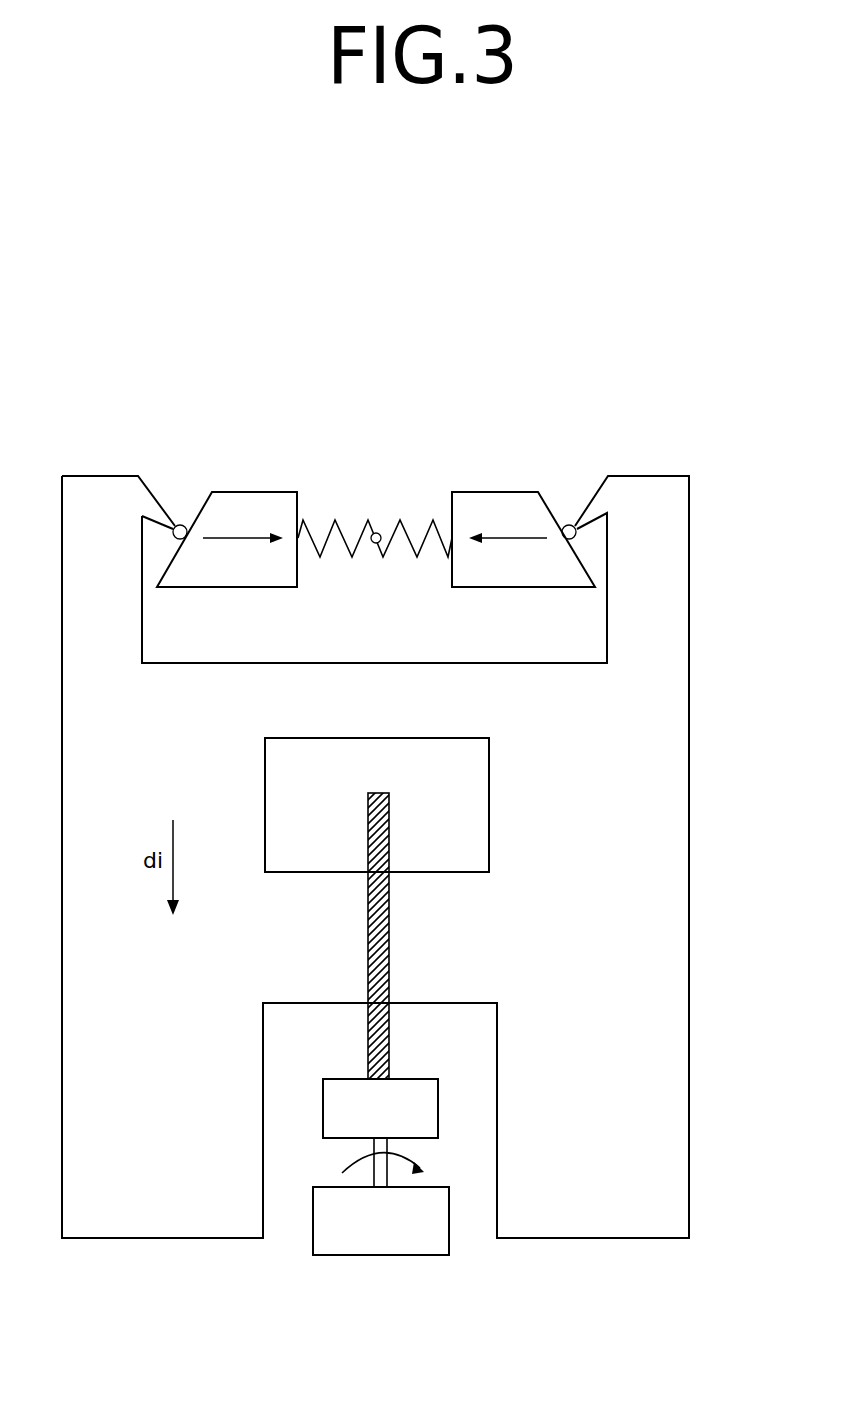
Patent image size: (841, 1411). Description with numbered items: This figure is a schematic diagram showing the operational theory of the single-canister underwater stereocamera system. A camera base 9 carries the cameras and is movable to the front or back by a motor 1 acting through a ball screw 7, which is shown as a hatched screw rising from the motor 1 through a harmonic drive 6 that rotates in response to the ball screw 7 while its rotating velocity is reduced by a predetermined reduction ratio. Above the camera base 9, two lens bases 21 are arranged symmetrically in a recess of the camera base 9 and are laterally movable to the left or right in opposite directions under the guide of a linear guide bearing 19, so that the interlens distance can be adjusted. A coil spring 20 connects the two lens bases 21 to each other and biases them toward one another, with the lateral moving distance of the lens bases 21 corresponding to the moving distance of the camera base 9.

The motor 1 is at (437, 1208).
The harmonic drive 6 is at (432, 1090).
The ball screw 7 is at (377, 820).
The camera base 9 is at (627, 797).
The linear guide bearing 19 is at (147, 490).
The coil spring 20 is at (397, 543).
The lens base 21 is at (263, 507).